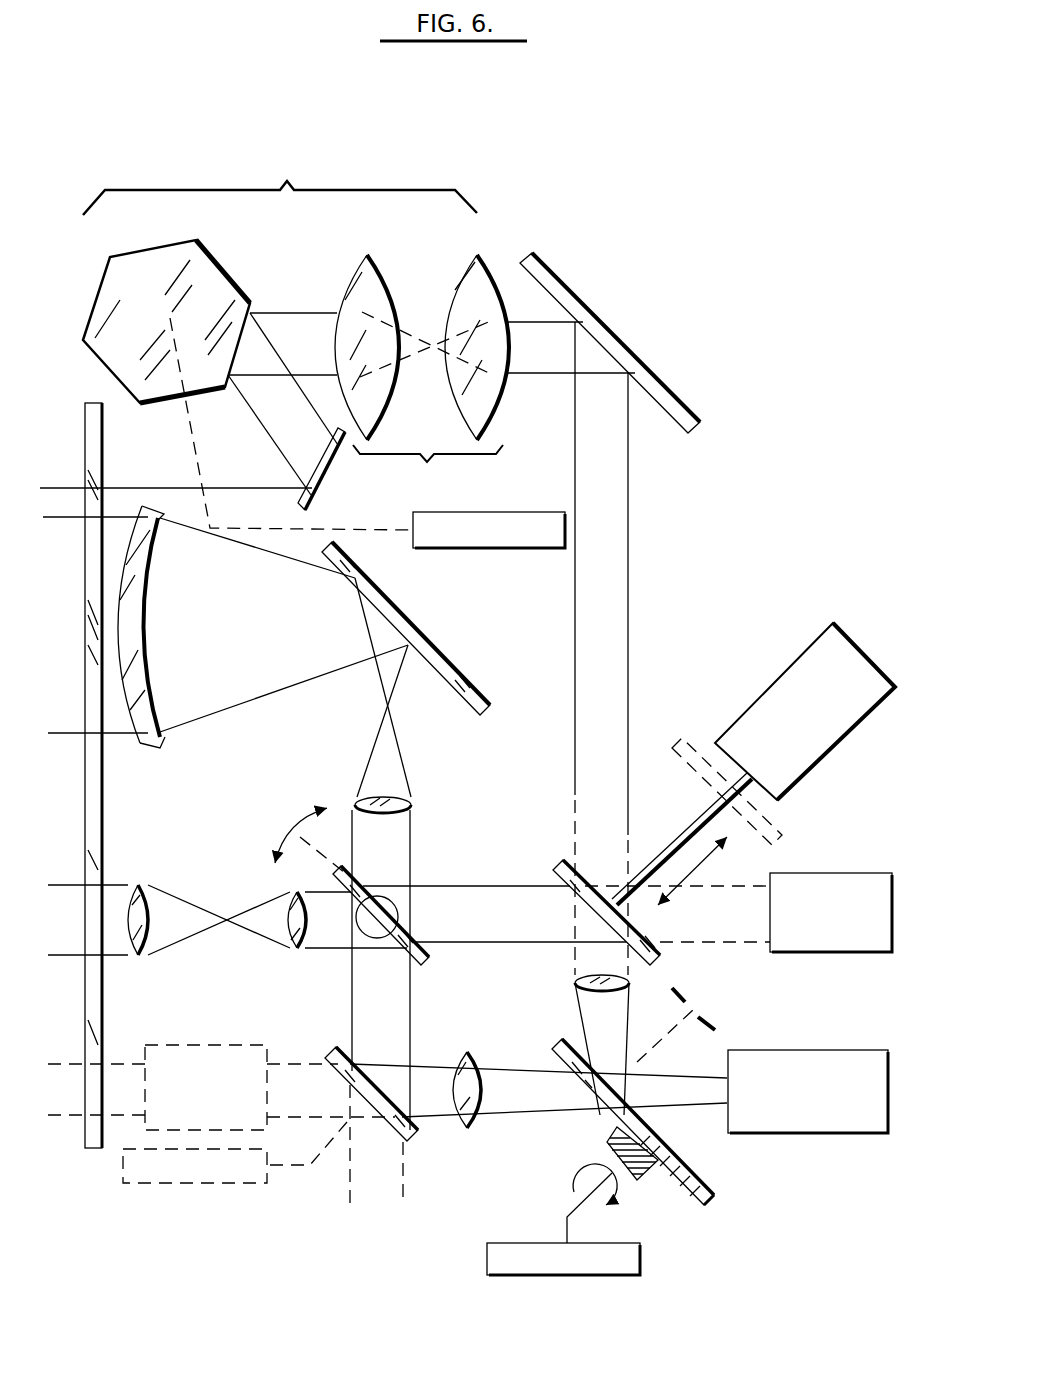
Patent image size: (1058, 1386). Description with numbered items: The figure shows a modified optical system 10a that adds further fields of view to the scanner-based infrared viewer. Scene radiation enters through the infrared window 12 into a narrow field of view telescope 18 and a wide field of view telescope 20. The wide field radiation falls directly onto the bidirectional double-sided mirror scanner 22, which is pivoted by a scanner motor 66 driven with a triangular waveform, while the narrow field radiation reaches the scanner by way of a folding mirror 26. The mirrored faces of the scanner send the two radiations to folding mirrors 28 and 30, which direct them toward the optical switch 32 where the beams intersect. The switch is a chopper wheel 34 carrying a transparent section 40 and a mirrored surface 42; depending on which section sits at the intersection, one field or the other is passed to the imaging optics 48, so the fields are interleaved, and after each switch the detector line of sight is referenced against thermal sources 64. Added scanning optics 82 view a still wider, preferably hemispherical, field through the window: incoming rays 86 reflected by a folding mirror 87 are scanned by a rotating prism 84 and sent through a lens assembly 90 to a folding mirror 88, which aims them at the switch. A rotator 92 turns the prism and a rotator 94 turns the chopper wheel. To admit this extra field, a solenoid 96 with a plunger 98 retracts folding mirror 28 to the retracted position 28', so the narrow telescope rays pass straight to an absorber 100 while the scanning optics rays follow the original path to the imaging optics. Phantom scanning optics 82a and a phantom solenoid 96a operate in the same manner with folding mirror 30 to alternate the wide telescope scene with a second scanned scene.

The system 10a is at (657, 313).
The infrared window 12 is at (97, 1150).
The narrow field of view telescope 18 is at (162, 754).
The wide field of view telescope 20 is at (150, 879).
The bidirectional double-sided mirror scanner 22 is at (424, 961).
The folding mirror 26 is at (463, 673).
The folding mirror 28 is at (581, 885).
The retracted position of folding mirror 28' is at (712, 760).
The folding mirror 30 is at (405, 1137).
The optical switch 32 is at (656, 1180).
The chopper wheel 34 is at (715, 1198).
The transparent section 40 is at (608, 1122).
The mirrored surface 42 is at (693, 1178).
The imaging optics 48 is at (802, 1050).
The reference thermal sources 64 is at (705, 1022).
The scanner motor 66 is at (397, 910).
The scanning optics 82 is at (280, 184).
The scanning optics 82a is at (183, 1043).
The rotating prism 84 is at (217, 258).
The incoming rays 86 is at (156, 480).
The folding mirror 87 is at (328, 478).
The folding mirror 88 is at (687, 410).
The lens assembly 90 is at (422, 374).
The rotator 92 is at (527, 512).
The rotator 94 is at (643, 1258).
The solenoid 96 is at (812, 645).
The solenoid 96a is at (213, 1184).
The plunger 98 is at (753, 790).
The absorber 100 is at (800, 955).